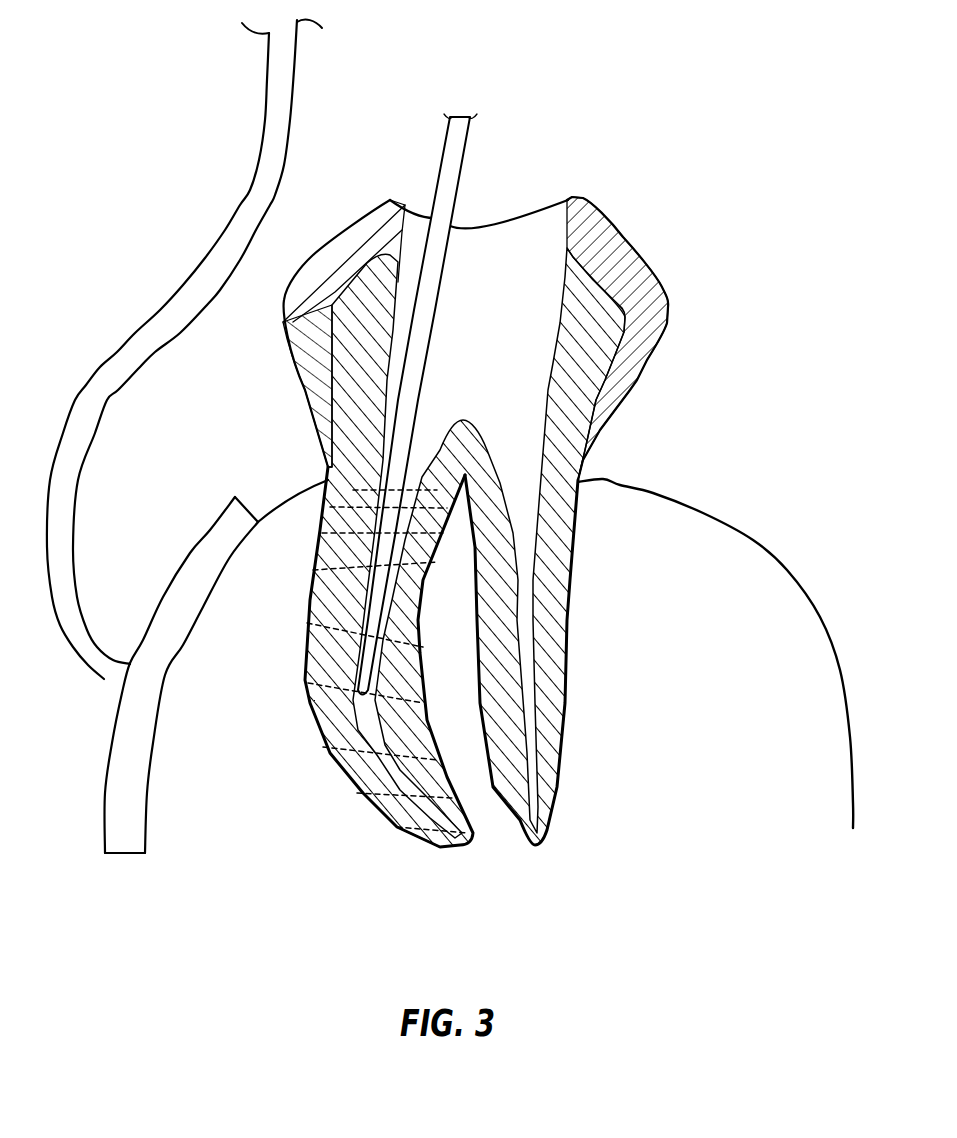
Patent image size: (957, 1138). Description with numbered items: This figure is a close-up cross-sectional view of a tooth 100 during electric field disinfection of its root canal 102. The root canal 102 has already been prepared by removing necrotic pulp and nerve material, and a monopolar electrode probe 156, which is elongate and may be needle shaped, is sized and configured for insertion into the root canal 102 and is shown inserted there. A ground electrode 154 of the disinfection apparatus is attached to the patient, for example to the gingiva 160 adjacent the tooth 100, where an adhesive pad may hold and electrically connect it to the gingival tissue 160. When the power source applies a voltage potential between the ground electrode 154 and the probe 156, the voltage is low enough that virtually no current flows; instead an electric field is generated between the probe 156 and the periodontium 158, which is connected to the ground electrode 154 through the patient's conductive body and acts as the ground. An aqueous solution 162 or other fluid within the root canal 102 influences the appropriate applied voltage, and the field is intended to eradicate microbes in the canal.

The tooth 100 is at (504, 514).
The root canal 102 is at (418, 468).
The ground electrode 154 is at (167, 590).
The monopolar electrode probe 156 is at (455, 178).
The periodontium 158 is at (318, 740).
The gingiva 160 is at (273, 510).
The aqueous solution 162 is at (387, 463).